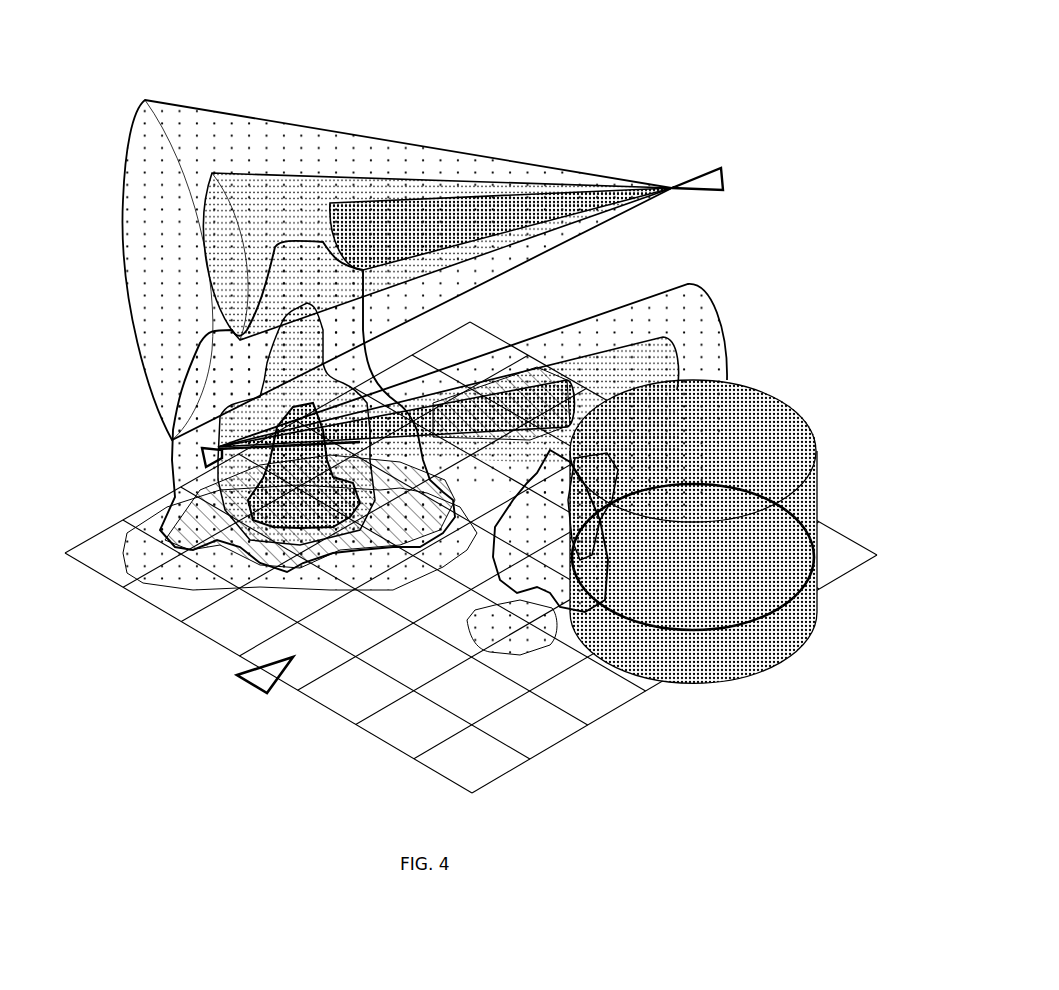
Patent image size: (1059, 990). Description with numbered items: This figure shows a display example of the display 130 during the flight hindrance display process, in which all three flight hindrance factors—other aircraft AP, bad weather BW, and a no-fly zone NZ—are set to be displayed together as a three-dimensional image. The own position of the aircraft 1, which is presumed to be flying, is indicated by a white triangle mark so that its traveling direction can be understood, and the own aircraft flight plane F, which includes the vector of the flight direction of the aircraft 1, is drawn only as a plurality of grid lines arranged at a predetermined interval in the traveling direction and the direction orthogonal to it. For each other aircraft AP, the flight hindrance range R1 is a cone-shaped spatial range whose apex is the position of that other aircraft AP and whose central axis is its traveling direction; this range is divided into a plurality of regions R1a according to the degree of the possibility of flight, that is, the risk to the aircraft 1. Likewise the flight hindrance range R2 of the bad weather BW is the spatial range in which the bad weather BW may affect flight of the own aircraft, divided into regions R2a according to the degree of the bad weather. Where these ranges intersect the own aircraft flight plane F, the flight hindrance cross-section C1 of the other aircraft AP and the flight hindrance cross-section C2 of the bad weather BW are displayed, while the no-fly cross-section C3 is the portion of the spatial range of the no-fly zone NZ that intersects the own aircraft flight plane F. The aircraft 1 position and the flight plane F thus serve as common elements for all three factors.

The flight hindrance range of other aircraft R1 is at (200, 112).
The regions of flight hindrance range R1 R1a is at (313, 190).
The other aircraft AP is at (692, 178).
The display 130 is at (767, 138).
The flight hindrance cross-section of other aircraft C1 is at (597, 390).
The no-fly zone NZ is at (813, 435).
The flight hindrance range of bad weather R2 is at (172, 420).
The regions of flight hindrance range R2 R2a is at (360, 408).
The flight hindrance cross-section of bad weather C2 is at (183, 523).
The bad weather BW is at (487, 567).
The aircraft 1 is at (268, 668).
The own aircraft flight plane F is at (603, 713).
The no-fly cross-section C3 is at (758, 587).